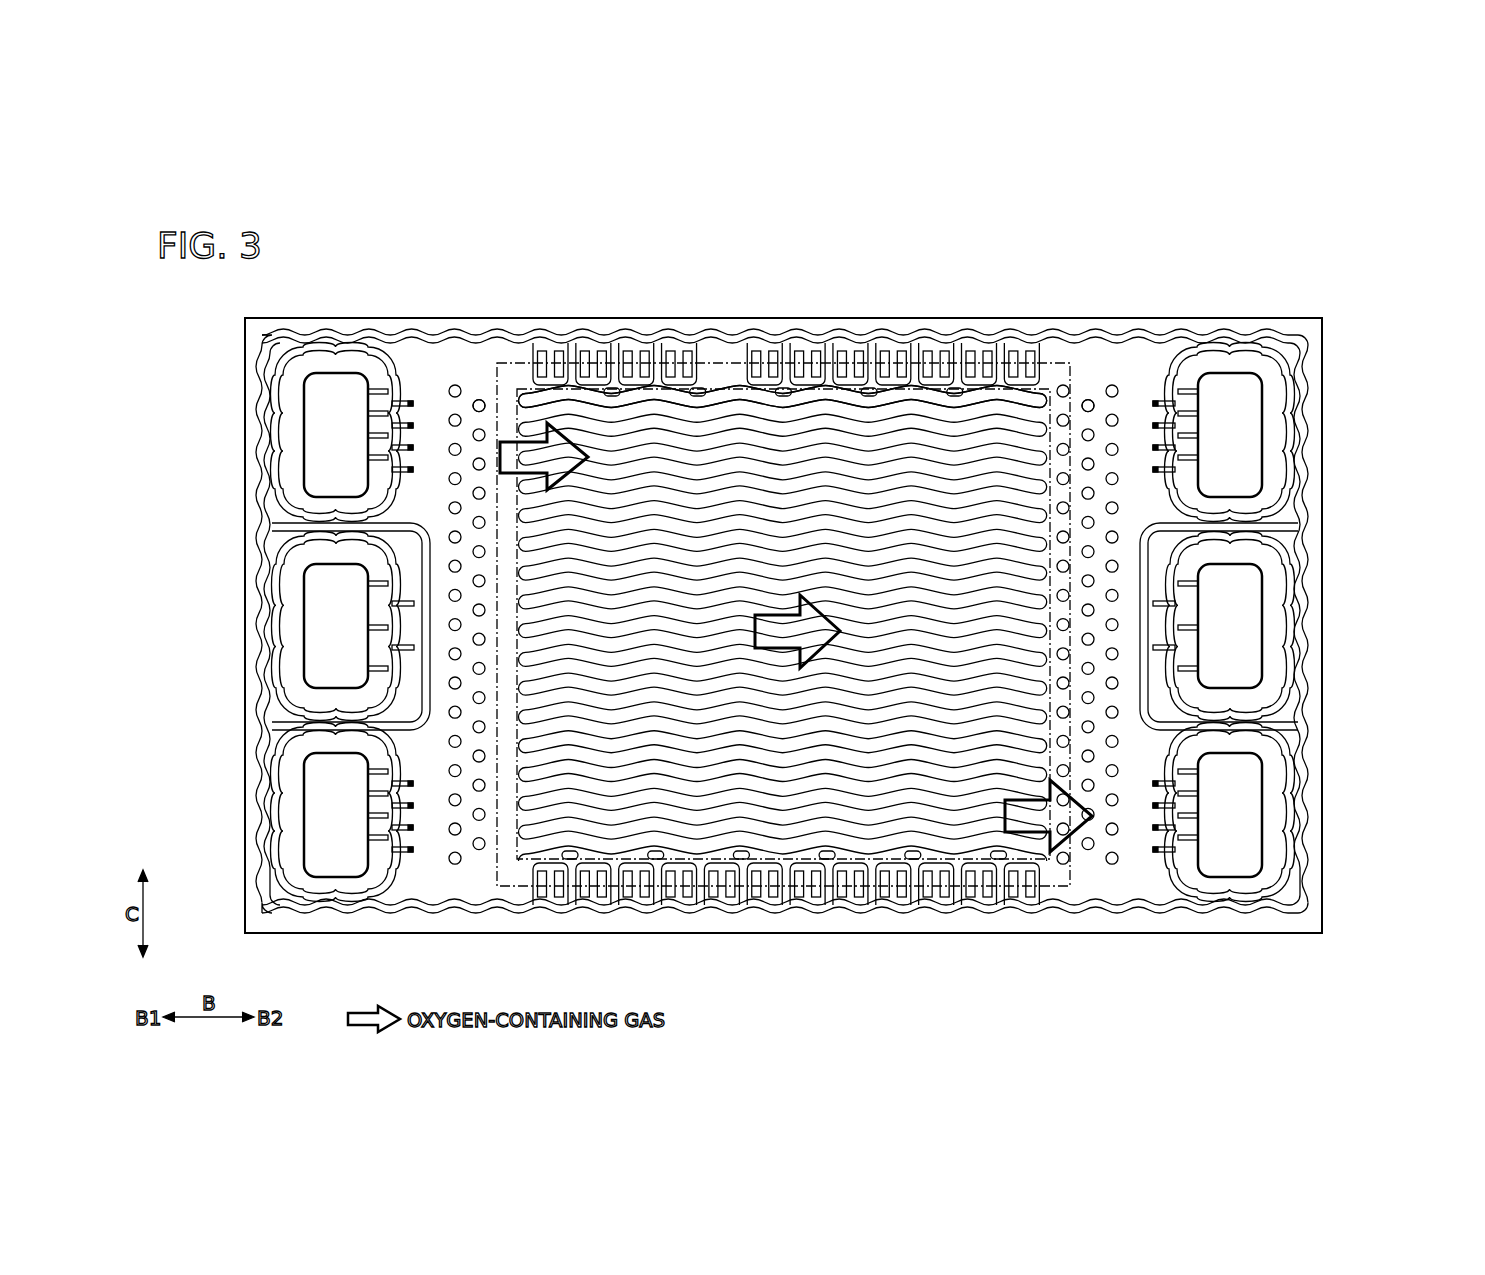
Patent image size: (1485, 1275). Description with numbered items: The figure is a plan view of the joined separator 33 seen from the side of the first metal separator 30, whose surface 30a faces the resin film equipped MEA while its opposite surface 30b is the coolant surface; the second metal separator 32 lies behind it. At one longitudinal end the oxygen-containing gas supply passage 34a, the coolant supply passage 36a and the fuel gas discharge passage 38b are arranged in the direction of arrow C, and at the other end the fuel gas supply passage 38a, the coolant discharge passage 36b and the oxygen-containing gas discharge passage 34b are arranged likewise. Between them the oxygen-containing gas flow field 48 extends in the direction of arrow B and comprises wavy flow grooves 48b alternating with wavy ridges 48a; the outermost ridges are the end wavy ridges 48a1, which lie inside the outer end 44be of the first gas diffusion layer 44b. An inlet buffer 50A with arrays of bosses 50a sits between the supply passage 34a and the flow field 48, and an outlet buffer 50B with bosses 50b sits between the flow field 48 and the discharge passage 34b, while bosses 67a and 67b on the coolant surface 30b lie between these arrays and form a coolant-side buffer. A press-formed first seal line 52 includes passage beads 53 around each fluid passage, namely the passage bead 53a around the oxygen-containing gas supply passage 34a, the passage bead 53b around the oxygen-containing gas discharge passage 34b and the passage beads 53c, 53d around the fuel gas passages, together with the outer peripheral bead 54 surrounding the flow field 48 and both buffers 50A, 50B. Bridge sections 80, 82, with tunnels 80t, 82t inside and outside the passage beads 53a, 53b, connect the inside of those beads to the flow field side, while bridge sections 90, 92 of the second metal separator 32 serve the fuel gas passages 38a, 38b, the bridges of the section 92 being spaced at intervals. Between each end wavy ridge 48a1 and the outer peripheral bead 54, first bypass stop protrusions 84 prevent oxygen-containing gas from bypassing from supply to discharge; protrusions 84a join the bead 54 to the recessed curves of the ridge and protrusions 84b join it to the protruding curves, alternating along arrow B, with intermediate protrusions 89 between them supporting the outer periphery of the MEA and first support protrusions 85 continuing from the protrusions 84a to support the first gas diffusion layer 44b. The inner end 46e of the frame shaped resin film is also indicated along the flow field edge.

The first metal separator 30 is at (634, 314).
The surface 30a is at (548, 333).
The surface 30b is at (591, 340).
The second metal separator 32 is at (656, 330).
The separator surface 33 is at (783, 577).
The oxygen-containing gas supply passage 34a is at (318, 401).
The oxygen-containing gas discharge passage 34b is at (1248, 803).
The coolant supply passage 36a is at (317, 600).
The coolant discharge passage 36b is at (1250, 602).
The fuel gas supply passage 38a is at (1246, 423).
The fuel gas discharge passage 38b is at (318, 795).
The first gas diffusion layer 44b is at (768, 551).
The outer end of the first gas diffusion layer 44be is at (783, 624).
The inner end of the frame shaped resin film 46e is at (808, 888).
The oxygen-containing gas flow field 48 is at (783, 607).
The wavy ridges 48a is at (783, 611).
The end wavy ridges 48a1 is at (940, 392).
The wavy flow grooves 48b is at (750, 398).
The inlet buffer 50A is at (306, 568).
The bosses 50a is at (467, 624).
The outlet buffer 50B is at (1249, 568).
The bosses 50b is at (1087, 624).
The first seal line 52 is at (1260, 867).
The passage beads 53 is at (287, 562).
The passage bead 53a is at (283, 421).
The passage bead 53b is at (1258, 897).
The passage bead (fuel gas supply) 53c is at (1283, 402).
The passage bead (fuel gas discharge) 53d is at (283, 840).
The outer peripheral bead 54 is at (782, 619).
The bosses 67a is at (478, 399).
The bosses 67b is at (1087, 399).
The bridge section 80 is at (412, 378).
The tunnels 80t is at (403, 402).
The bridge section 82 is at (1150, 878).
The tunnels 82t is at (1192, 840).
The first bypass stop protrusions 84 is at (786, 625).
The first bypass stop protrusions 84a is at (866, 352).
The first bypass stop protrusions 84b is at (913, 352).
The first support protrusions 85 is at (790, 386).
The intermediate protrusions 89 is at (982, 352).
The bridge section 90 is at (1164, 372).
The bridge section 92 is at (406, 864).